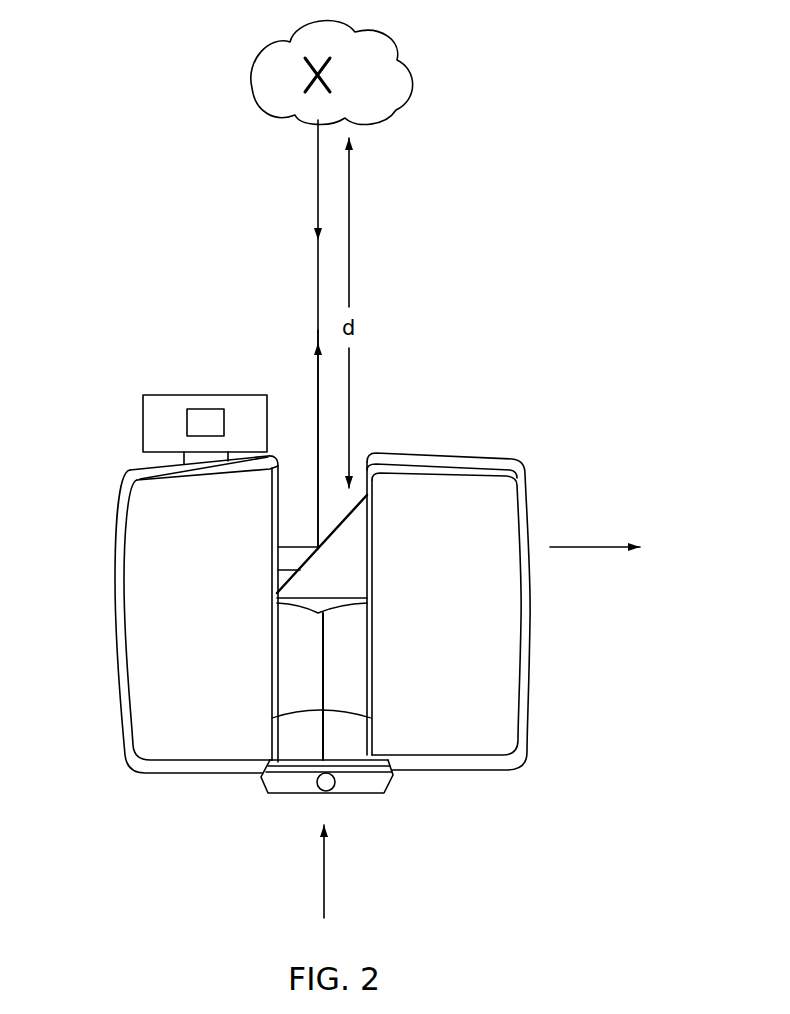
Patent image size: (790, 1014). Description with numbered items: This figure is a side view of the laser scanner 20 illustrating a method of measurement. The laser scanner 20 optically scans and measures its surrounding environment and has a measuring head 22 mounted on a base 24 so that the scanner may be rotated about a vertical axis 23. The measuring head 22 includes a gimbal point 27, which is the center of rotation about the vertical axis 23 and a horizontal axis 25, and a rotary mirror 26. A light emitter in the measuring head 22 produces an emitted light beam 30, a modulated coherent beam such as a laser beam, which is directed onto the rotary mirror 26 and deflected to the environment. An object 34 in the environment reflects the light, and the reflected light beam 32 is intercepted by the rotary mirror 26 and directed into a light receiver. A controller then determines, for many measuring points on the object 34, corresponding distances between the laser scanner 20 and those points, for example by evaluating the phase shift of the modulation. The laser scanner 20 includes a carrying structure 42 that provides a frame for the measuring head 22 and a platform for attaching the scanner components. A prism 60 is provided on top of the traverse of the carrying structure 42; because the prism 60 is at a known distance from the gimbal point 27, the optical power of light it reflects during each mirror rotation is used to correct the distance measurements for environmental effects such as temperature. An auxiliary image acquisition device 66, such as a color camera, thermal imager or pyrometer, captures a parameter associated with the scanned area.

The laser scanner 20 is at (180, 172).
The measuring head 22 is at (512, 410).
The vertical axis 23 is at (325, 893).
The base 24 is at (265, 787).
The horizontal axis 25 is at (580, 546).
The rotary mirror 26 is at (300, 570).
The gimbal point 27 is at (322, 550).
The emitted light beam 30 is at (317, 373).
The reflected light beam 32 is at (317, 218).
The object 34 is at (390, 42).
The carrying structure 42 is at (403, 818).
The prism 60 is at (324, 614).
The auxiliary image acquisition device 66 is at (172, 363).